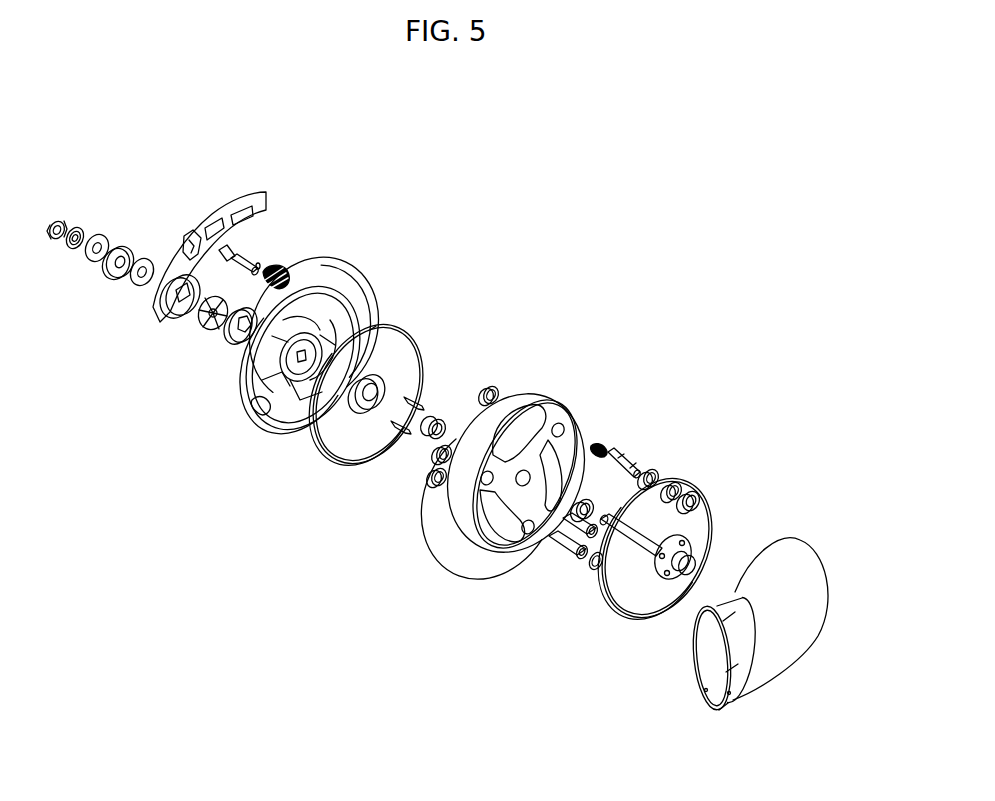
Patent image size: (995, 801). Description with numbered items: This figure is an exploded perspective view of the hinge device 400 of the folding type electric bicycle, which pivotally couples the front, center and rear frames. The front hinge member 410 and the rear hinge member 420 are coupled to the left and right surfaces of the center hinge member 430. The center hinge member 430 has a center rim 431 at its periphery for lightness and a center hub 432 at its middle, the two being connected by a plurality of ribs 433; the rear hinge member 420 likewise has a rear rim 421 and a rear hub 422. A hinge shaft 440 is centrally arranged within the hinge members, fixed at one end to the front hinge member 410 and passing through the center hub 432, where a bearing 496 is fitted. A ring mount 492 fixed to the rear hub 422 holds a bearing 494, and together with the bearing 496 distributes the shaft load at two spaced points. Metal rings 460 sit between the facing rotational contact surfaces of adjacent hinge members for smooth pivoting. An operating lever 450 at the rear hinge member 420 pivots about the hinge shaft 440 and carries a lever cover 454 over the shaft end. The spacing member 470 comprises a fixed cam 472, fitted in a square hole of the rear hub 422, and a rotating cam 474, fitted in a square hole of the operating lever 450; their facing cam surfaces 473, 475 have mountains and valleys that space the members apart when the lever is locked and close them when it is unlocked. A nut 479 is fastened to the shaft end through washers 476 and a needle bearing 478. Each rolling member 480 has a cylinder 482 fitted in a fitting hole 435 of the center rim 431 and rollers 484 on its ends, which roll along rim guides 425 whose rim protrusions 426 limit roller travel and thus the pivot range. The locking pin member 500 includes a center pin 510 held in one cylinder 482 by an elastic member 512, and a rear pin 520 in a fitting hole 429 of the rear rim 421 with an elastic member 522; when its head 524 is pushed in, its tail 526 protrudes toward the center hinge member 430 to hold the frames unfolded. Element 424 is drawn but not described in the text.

The hinge device 400 is at (519, 292).
The front hinge member 410 is at (788, 635).
The rear hinge member 420 is at (325, 330).
The rear rim 421 is at (282, 428).
The rear hub 422 is at (293, 355).
The hub 424 is at (345, 330).
The rim guide 425 is at (318, 305).
The rim protrusion 426 is at (370, 292).
The fitting hole 429 is at (366, 252).
The center hinge member 430 is at (520, 467).
The center rim 431 is at (558, 415).
The center hub 432 is at (520, 453).
The rib 433 is at (503, 487).
The fitting hole 435 is at (567, 430).
The hinge shaft 440 is at (643, 545).
The operating lever 450 is at (270, 197).
The lever cover 454 is at (168, 310).
The metal ring 460 is at (422, 337).
The spacing member 470 is at (213, 388).
The fixed cam 472 is at (237, 342).
The cam surface 473 is at (236, 316).
The rotating cam 474 is at (203, 327).
The cam surface 475 is at (212, 296).
The washers 476 is at (135, 288).
The needle bearing 478 is at (124, 245).
The nut 479 is at (66, 222).
The rolling member 480 is at (569, 565).
The cylinder 482 is at (652, 470).
The roller 484 is at (488, 386).
The ring mount 492 is at (379, 375).
The bearing 494 is at (431, 417).
The bearing 496 is at (583, 502).
The locking pin member 500 is at (268, 260).
The center pin 510 is at (620, 452).
The elastic member 512 is at (598, 445).
The rear pin 520 is at (245, 252).
The elastic member 522 is at (280, 265).
The head 524 is at (205, 237).
The tail 526 is at (259, 261).